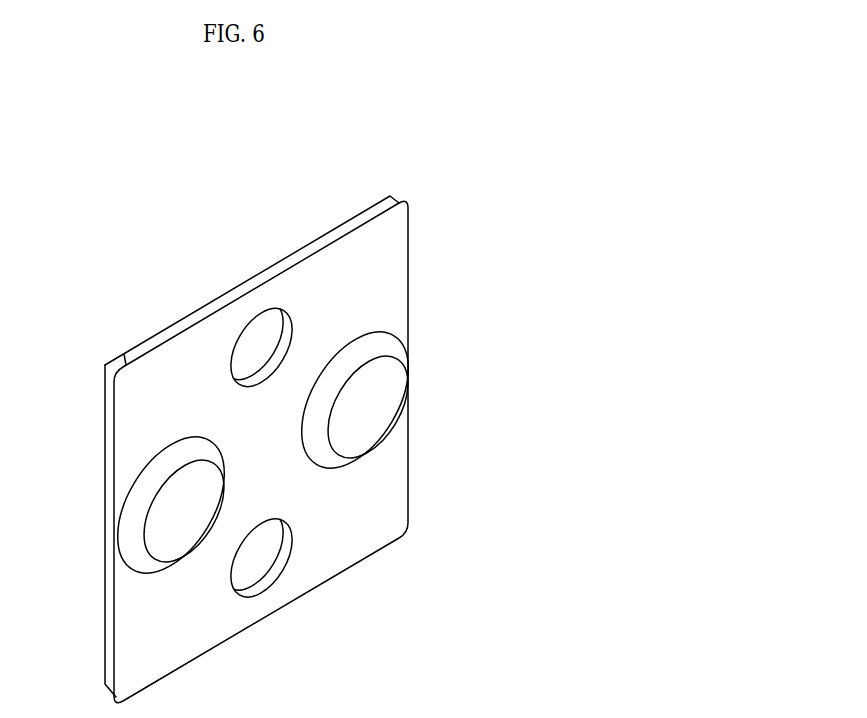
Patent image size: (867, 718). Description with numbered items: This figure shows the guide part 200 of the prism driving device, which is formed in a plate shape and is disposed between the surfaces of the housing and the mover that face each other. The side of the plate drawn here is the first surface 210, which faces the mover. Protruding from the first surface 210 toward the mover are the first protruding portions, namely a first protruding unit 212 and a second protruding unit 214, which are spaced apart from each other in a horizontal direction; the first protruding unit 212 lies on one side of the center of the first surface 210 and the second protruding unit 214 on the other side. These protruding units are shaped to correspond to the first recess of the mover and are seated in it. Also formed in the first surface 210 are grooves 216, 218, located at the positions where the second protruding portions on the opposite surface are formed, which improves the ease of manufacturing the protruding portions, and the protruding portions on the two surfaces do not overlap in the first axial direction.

The guide part 200 is at (175, 134).
The first surface 210 is at (387, 287).
The first protruding unit 212 is at (173, 530).
The second protruding unit 214 is at (383, 407).
The groove 216 is at (265, 336).
The groove 218 is at (258, 565).